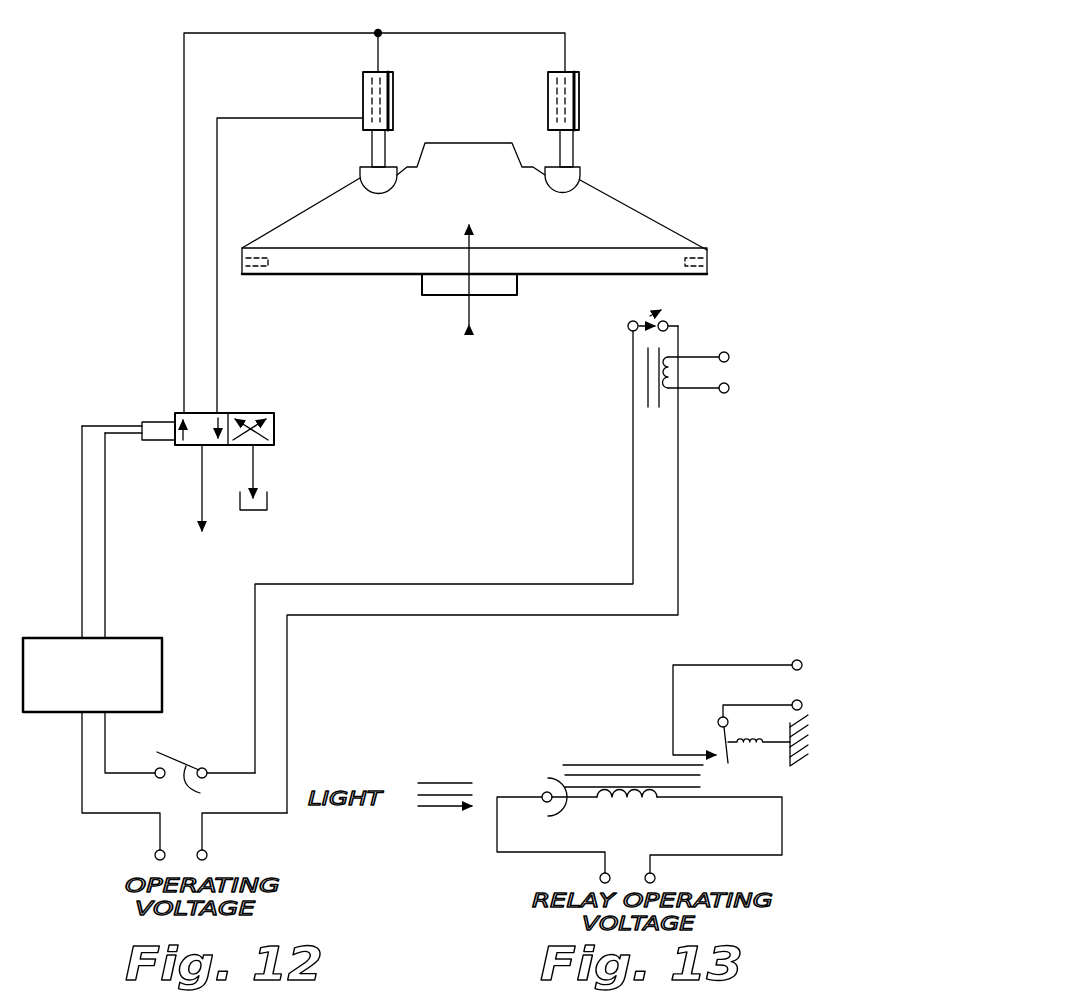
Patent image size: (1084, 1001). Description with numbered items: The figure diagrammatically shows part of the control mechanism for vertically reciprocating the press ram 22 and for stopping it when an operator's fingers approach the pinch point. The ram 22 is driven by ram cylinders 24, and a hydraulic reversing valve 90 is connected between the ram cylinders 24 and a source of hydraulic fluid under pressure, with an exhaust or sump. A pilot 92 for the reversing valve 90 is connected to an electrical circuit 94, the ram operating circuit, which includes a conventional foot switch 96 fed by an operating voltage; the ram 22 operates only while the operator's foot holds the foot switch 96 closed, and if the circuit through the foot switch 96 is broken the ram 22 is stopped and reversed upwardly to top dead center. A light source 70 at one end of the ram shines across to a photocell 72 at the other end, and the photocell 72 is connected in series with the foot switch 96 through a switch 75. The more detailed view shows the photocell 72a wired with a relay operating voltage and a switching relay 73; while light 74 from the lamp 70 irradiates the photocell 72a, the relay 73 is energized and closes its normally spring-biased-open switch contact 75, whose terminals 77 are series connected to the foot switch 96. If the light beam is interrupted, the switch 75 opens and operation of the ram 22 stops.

In FIG. 12, the ram 22 is at (600, 185).
In FIG. 12, the ram cylinders 24 is at (363, 98).
In FIG. 12, the light source 70 is at (257, 277).
In FIG. 12, the photocell 72 is at (703, 248).
In FIG. 13, the photocell 72a is at (549, 778).
In FIG. 12, the switching relay 73 is at (643, 389).
In FIG. 13, the switching relay 73 is at (637, 816).
In FIG. 13, the light 74 is at (440, 780).
In FIG. 12, the switch contact 75 is at (660, 316).
In FIG. 13, the switch contact 75 is at (727, 742).
In FIG. 12, the terminals 77 is at (628, 330).
In FIG. 13, the terminals 77 is at (792, 701).
In FIG. 12, the hydraulic reversing valve 90 is at (278, 430).
In FIG. 12, the pilot 92 is at (158, 413).
In FIG. 12, the electrical circuit 94 is at (163, 668).
In FIG. 12, the foot switch 96 is at (184, 786).
In FIG. 13, the foot switch 96 is at (793, 687).